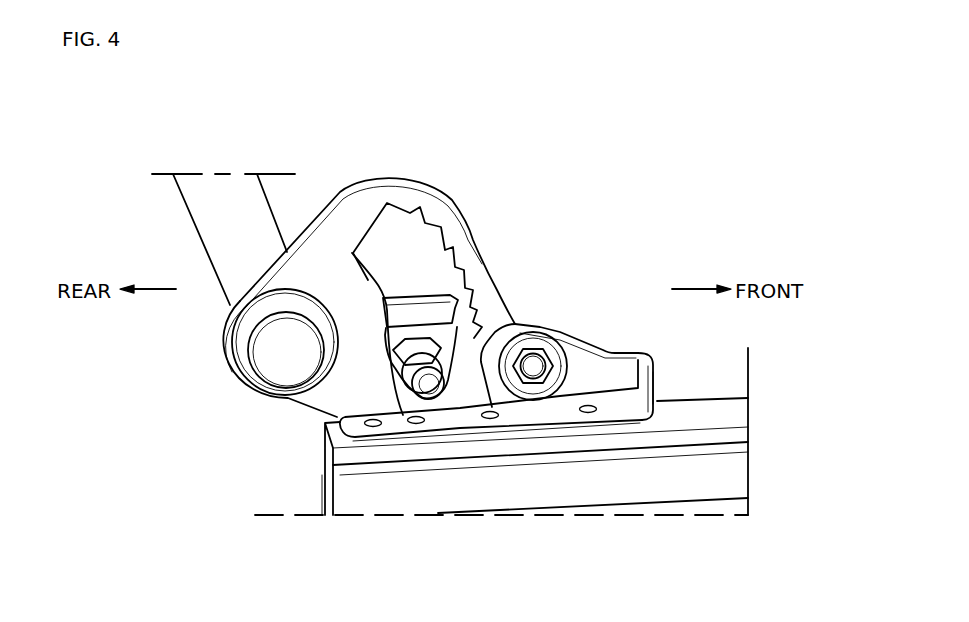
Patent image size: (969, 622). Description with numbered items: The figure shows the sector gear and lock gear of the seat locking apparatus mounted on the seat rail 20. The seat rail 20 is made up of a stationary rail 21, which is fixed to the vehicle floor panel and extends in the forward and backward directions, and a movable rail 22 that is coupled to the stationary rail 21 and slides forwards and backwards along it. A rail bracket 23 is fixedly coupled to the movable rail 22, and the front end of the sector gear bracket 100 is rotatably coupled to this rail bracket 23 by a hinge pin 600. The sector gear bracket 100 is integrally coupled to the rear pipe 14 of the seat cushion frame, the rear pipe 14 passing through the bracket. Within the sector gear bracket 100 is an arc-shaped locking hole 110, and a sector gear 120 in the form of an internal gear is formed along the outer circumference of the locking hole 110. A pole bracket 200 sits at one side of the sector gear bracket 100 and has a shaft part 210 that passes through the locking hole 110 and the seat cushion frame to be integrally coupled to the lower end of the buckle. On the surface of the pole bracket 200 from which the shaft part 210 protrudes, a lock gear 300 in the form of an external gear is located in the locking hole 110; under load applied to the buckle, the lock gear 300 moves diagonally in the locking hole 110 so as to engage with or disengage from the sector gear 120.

The rear pipe 14 is at (212, 202).
The sector gear bracket 100 is at (393, 198).
The locking hole 110 is at (367, 267).
The sector gear 120 is at (438, 242).
The pole bracket 200 is at (430, 308).
The shaft part 210 is at (433, 386).
The lock gear 300 is at (470, 336).
The hinge pin 600 is at (534, 386).
The rail bracket 23 is at (622, 402).
The movable rail 22 is at (723, 417).
The stationary rail 21 is at (723, 483).
The seat rail 20 is at (847, 412).